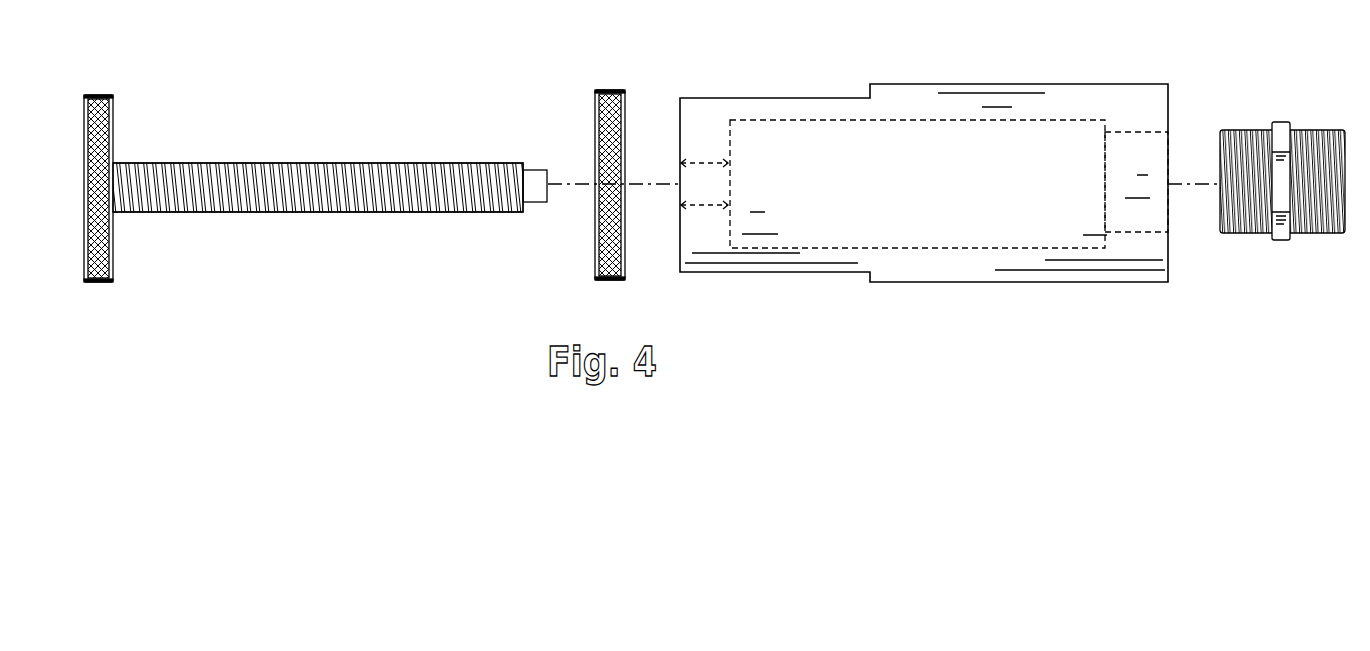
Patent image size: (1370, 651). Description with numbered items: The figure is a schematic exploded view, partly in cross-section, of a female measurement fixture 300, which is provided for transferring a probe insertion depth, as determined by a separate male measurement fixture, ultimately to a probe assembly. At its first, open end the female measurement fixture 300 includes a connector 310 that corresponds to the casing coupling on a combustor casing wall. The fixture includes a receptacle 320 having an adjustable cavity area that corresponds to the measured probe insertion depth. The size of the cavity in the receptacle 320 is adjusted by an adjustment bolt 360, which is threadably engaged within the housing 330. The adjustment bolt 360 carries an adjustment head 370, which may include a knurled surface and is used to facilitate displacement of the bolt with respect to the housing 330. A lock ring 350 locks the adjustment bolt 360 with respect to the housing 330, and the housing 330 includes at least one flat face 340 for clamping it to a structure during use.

The female measurement fixture 300 is at (924, 214).
The connector 310 is at (1287, 252).
The receptacle 320 is at (987, 214).
The housing 330 is at (931, 262).
The flat face 340 is at (759, 95).
The lock ring 350 is at (613, 284).
The adjustment bolt 360 is at (228, 216).
The adjustment head 370 is at (98, 285).